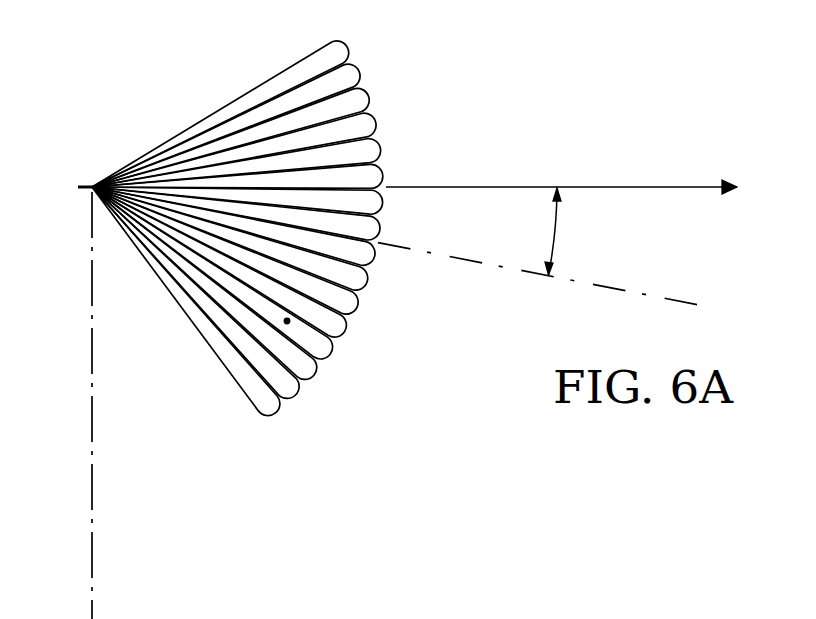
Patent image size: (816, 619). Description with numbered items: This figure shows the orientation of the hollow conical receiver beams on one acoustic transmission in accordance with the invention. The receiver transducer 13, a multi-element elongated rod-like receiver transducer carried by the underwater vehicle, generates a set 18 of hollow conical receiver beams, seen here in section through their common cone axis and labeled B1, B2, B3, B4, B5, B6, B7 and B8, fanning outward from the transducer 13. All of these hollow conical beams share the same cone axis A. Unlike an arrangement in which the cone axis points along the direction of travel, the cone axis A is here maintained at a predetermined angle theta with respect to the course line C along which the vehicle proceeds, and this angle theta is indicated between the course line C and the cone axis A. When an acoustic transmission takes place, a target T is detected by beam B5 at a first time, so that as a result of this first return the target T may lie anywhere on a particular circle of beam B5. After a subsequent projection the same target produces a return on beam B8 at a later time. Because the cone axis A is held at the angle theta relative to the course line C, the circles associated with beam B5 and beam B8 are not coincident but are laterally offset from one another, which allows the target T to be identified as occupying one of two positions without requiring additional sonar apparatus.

The set of hollow conical receiver beams 18 is at (188, 70).
The receiver transducer 13 is at (91, 183).
The hollow conical beam B1 is at (387, 231).
The hollow conical beam B2 is at (390, 205).
The hollow conical beam B3 is at (389, 176).
The hollow conical beam B4 is at (387, 147).
The hollow conical beam B5 is at (380, 122).
The hollow conical beam B6 is at (373, 96).
The hollow conical beam B7 is at (362, 73).
The hollow conical beam B8 is at (349, 48).
The course line C is at (697, 185).
The cone axis A is at (478, 262).
The predetermined angle theta is at (564, 231).
The target T is at (286, 322).